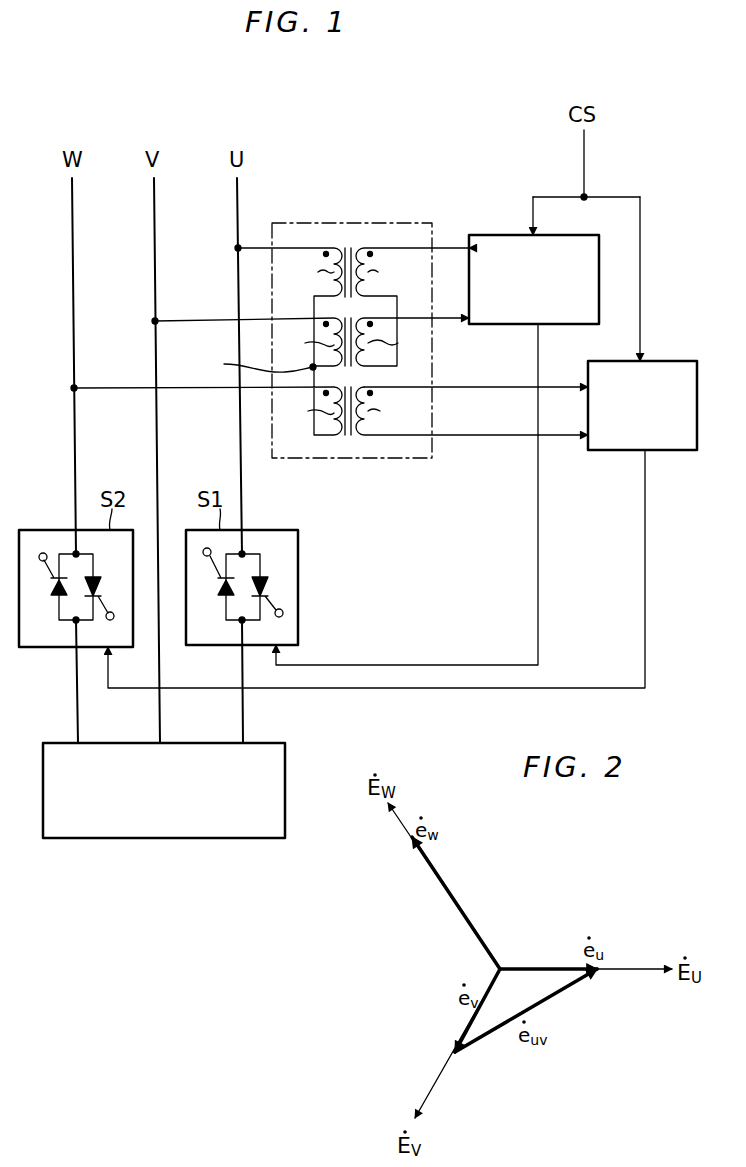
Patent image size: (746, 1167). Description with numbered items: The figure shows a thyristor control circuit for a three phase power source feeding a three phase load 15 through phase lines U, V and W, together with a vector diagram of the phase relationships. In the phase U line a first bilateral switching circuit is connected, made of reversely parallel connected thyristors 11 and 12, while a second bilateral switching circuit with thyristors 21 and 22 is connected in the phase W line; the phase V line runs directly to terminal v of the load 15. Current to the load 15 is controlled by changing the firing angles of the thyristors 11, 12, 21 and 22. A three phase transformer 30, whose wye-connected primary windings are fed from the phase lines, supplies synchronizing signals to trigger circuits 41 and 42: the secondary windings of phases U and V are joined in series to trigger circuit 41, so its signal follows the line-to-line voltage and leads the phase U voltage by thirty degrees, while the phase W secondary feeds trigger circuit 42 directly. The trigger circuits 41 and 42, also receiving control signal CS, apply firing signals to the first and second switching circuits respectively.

The thyristor 11 is at (270, 588).
The thyristor 12 is at (222, 598).
The three phase load 15 is at (285, 805).
The thyristor 21 is at (98, 586).
The thyristor 22 is at (56, 598).
The three phase transformer 30 is at (325, 223).
The trigger circuit 41 is at (516, 235).
The trigger circuit 42 is at (618, 450).